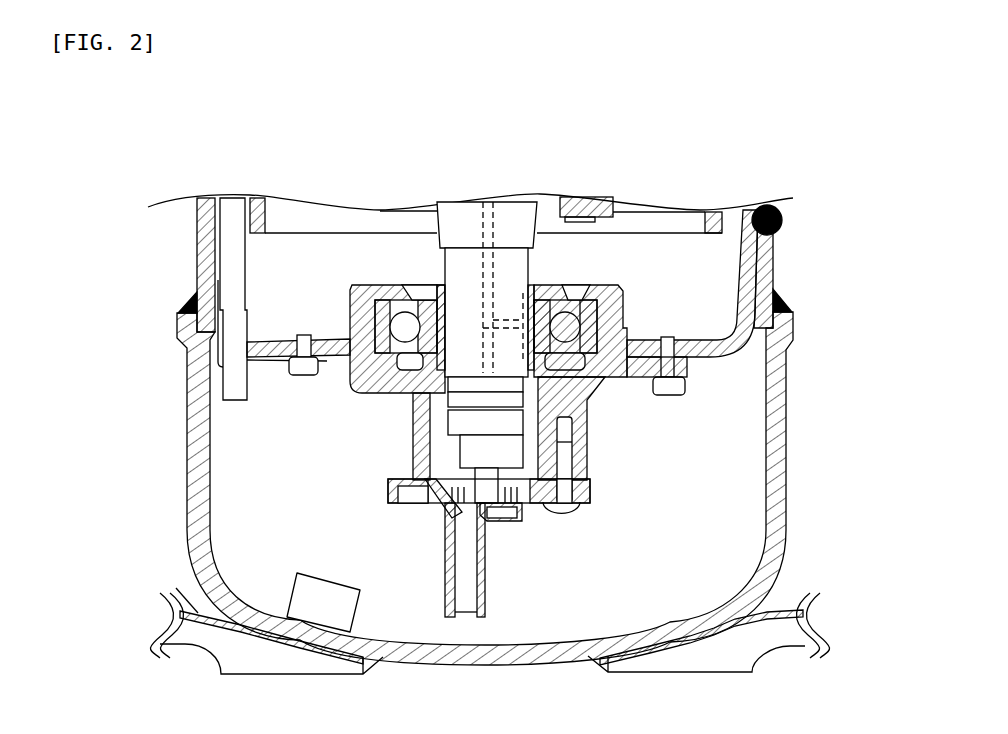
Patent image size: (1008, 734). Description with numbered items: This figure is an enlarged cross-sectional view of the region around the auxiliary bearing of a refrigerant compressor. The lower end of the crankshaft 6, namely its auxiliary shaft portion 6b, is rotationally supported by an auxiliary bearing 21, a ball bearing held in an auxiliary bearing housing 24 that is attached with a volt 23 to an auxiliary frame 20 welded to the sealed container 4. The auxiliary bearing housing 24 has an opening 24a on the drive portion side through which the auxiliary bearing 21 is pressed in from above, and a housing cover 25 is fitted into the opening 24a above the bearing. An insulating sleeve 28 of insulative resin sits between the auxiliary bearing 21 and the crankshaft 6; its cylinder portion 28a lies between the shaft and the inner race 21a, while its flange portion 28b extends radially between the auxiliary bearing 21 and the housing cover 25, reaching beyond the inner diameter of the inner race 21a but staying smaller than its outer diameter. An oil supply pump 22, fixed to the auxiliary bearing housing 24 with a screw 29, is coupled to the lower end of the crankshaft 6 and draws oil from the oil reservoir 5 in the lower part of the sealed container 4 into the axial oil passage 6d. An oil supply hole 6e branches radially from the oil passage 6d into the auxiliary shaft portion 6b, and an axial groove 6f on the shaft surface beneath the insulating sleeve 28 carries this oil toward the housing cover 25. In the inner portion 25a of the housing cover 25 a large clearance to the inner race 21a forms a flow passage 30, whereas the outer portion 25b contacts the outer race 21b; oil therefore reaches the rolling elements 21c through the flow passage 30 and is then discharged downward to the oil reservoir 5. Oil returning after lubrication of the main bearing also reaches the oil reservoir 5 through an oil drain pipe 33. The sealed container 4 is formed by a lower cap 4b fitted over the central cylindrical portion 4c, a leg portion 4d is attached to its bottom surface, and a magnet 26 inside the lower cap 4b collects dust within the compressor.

The sealed container 4 is at (200, 236).
The central cylindrical portion 4c is at (206, 265).
The lower cap 4b is at (195, 495).
The leg portion 4d is at (180, 588).
The oil reservoir 5 is at (676, 493).
The crankshaft 6 is at (517, 365).
The auxiliary shaft portion 6b is at (486, 312).
The oil passage 6d is at (494, 232).
The oil supply hole 6e is at (590, 392).
The axial groove 6f is at (523, 300).
The auxiliary frame 20 is at (727, 357).
The auxiliary bearing 21 is at (608, 305).
The inner race 21a is at (392, 385).
The outer race 21b is at (397, 362).
The rolling elements 21c is at (405, 327).
The oil supply pump 22 is at (432, 500).
The volt 23 is at (680, 387).
The auxiliary bearing housing 24 is at (614, 323).
The opening 24a is at (592, 290).
The housing cover 25 is at (577, 198).
The inner portion 25a is at (586, 209).
The outer portion 25b is at (565, 298).
The magnet 26 is at (350, 590).
The insulating sleeve 28 is at (412, 415).
The cylinder portion 28a is at (421, 436).
The flange portion 28b is at (440, 288).
The screw 29 is at (563, 510).
The flow passage 30 is at (408, 288).
The oil drain pipe 33 is at (233, 273).